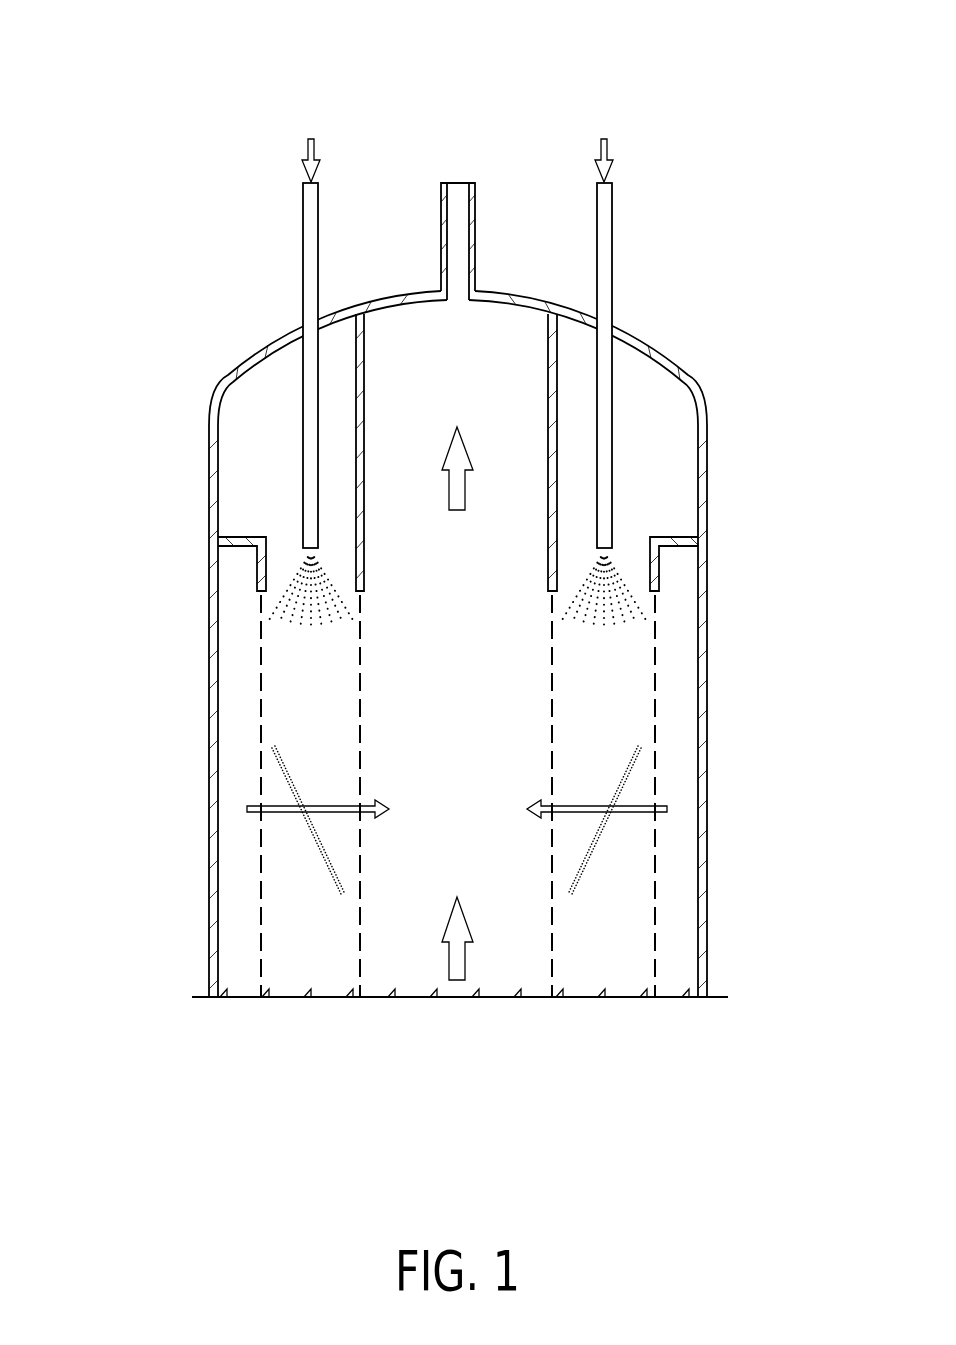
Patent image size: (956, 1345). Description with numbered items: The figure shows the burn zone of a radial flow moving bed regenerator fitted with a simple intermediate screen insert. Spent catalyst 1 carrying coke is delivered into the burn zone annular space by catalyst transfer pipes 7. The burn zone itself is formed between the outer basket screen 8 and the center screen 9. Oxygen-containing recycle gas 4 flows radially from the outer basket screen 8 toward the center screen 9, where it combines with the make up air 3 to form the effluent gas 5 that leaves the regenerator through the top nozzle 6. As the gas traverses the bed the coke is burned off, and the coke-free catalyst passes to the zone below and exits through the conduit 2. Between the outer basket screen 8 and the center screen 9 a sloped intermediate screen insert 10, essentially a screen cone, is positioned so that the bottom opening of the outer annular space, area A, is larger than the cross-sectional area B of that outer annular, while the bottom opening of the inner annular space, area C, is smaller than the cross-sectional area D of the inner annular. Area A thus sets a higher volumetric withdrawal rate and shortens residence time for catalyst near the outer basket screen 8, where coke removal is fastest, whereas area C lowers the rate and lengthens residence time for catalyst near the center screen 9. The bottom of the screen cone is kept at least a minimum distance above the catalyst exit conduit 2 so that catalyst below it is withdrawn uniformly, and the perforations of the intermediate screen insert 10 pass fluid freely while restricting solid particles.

The spent catalyst 1 is at (311, 139).
The catalyst exit conduit 2 is at (297, 980).
The make up air 3 is at (457, 975).
The recycle gas 4 is at (632, 813).
The effluent gas 5 is at (449, 500).
The top nozzle 6 is at (462, 190).
The catalyst transfer pipe 7 is at (311, 418).
The outer basket screen 8 is at (656, 688).
The center screen 9 is at (554, 945).
The intermediate screen insert 10 is at (588, 868).
The bottom opening area of outer annular A is at (312, 895).
The cross sectional area of outer annular B is at (267, 745).
The bottom opening area of inner annular C is at (353, 893).
The cross sectional area of inner annular D is at (298, 748).